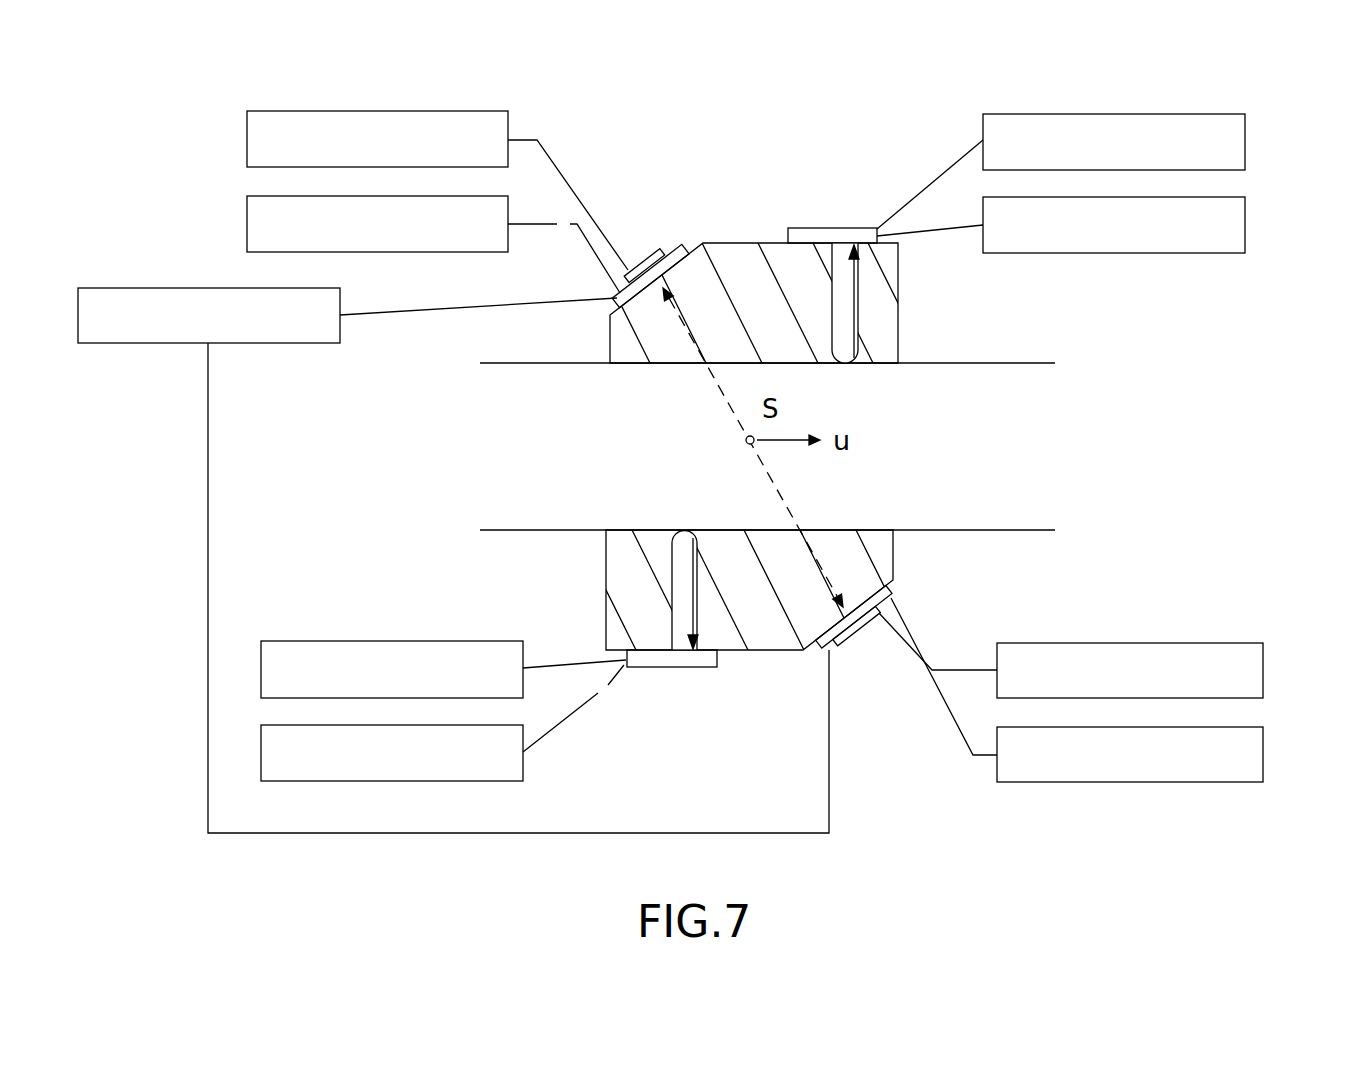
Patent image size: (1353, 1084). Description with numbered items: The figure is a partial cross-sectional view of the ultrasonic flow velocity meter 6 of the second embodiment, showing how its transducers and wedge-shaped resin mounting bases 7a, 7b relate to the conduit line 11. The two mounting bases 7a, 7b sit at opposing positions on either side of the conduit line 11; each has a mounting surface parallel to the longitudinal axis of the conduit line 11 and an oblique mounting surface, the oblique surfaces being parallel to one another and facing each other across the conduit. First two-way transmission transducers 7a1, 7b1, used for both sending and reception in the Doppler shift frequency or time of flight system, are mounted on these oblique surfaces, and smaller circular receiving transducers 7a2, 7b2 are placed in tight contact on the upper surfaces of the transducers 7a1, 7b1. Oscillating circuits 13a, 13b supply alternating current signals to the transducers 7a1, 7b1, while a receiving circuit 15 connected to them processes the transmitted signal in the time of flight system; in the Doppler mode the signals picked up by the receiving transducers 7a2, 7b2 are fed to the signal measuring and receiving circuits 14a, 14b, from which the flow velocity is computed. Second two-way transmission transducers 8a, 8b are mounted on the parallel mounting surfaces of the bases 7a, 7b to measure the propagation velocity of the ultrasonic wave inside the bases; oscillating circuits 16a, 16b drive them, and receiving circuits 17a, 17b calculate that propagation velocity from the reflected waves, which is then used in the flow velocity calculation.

The ultrasonic flow velocity meter 6 is at (671, 122).
The mounting base 7a is at (888, 299).
The mounting base 7b is at (608, 587).
The first two-way transmission transducer 7a1 is at (687, 243).
The receiving transducer 7a2 is at (657, 248).
The first two-way transmission transducer 7b1 is at (818, 652).
The receiving transducer 7b2 is at (858, 644).
The second two-way transmission transducer 8a is at (834, 228).
The second two-way transmission transducer 8b is at (673, 668).
The conduit line 11 is at (1005, 362).
The oscillating circuit 13a is at (247, 210).
The oscillating circuit 13b is at (1264, 670).
The signal measuring and receiving circuit 14a is at (247, 128).
The signal measuring and receiving circuit 14b is at (1264, 747).
The receiving circuit 15 is at (110, 288).
The oscillating circuit 16a is at (1246, 140).
The oscillating circuit 16b is at (292, 640).
The receiving circuit 17a is at (1246, 210).
The receiving circuit 17b is at (327, 782).